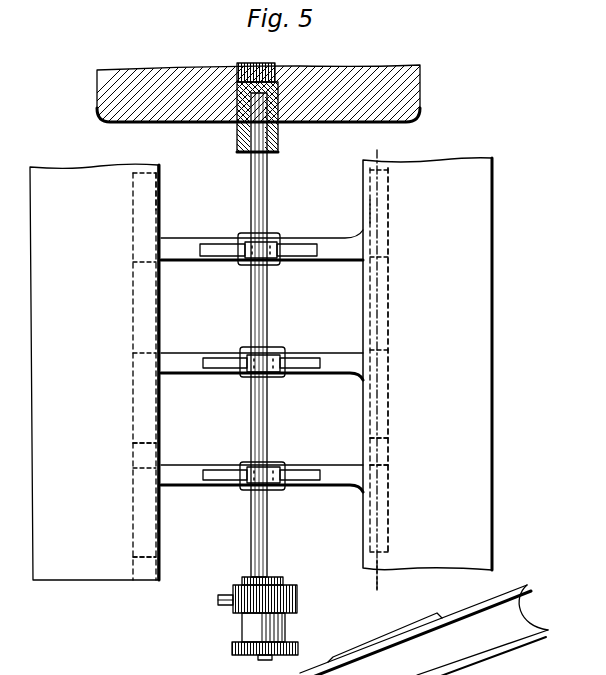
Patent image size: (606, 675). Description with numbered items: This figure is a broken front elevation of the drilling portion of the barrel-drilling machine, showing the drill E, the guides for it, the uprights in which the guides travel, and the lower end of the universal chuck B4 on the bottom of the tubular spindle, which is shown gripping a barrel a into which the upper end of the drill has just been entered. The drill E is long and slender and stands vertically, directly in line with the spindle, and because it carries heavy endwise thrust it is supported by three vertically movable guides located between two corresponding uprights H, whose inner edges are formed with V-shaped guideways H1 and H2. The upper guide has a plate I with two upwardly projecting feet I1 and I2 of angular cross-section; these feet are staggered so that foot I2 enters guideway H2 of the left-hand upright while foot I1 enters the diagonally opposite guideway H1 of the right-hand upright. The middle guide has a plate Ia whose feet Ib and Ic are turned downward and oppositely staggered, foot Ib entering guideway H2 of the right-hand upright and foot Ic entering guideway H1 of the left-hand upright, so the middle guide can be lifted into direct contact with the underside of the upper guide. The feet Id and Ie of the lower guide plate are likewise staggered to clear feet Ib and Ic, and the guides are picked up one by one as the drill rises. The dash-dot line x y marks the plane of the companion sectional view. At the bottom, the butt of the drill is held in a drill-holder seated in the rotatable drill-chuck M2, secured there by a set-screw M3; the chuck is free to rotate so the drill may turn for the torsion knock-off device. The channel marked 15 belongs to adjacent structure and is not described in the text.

The universal chuck B4 is at (421, 97).
The barrel a is at (279, 133).
The drill E is at (268, 183).
The uprights H is at (427, 364).
The guideway H1 is at (133, 276).
The guideway H2 is at (390, 298).
The plate of the upper guide I is at (192, 244).
The plate of the middle guide Ia is at (194, 357).
The foot Ib is at (316, 470).
The foot Ic is at (137, 433).
The foot Id is at (385, 503).
The foot Ie is at (137, 526).
The foot I1 is at (363, 212).
The foot I2 is at (161, 190).
The drill-chuck M2 is at (297, 593).
The set-screw M3 is at (216, 600).
The section line x is at (369, 363).
The section line y is at (372, 577).
The channel rail 15 is at (424, 630).